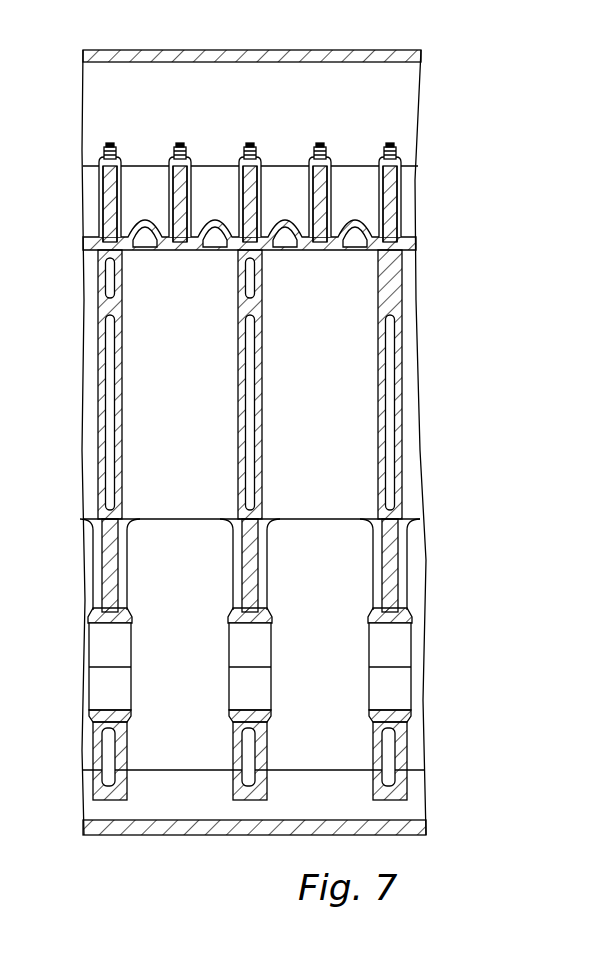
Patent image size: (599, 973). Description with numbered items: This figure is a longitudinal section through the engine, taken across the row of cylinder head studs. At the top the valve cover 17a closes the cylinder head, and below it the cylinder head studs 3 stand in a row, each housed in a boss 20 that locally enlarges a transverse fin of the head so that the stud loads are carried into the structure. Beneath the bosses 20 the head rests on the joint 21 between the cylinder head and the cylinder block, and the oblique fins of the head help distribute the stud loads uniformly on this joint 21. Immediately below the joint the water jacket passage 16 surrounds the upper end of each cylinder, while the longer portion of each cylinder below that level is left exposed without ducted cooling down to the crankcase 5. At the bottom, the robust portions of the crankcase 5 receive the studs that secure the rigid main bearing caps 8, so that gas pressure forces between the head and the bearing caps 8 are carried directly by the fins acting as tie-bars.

The valve cover 17a is at (274, 50).
The stud 3 is at (112, 147).
The boss 20 is at (279, 169).
The joint 21 is at (85, 251).
The passage 16 is at (243, 280).
The crankcase 5 is at (428, 593).
The main bearing cap 8 is at (392, 742).